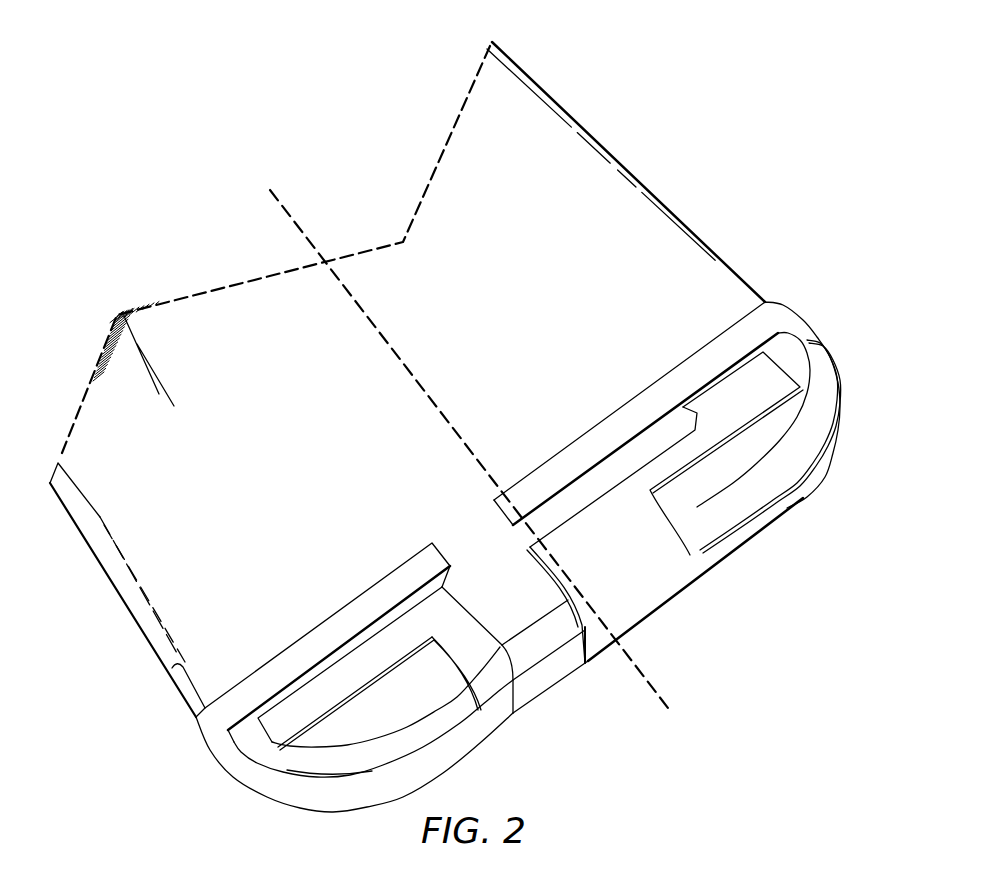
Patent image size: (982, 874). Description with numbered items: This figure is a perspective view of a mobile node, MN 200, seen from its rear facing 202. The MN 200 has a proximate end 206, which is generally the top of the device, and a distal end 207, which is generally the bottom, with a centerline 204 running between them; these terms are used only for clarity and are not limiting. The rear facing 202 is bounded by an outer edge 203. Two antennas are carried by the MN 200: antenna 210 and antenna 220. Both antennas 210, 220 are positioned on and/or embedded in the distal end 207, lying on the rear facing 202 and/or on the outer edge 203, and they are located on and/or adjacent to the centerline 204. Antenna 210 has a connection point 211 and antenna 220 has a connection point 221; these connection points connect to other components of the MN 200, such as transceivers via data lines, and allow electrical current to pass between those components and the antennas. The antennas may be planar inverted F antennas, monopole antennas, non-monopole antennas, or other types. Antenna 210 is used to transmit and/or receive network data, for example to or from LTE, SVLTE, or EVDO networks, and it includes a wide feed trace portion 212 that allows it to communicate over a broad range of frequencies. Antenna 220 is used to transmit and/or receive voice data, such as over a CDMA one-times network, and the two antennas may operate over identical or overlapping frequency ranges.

The MN 200 is at (163, 172).
The rear facing 202 is at (479, 289).
The outer edge 203 is at (327, 772).
The centerline 204 is at (636, 658).
The proximate end 206 is at (495, 40).
The distal end 207 is at (550, 673).
The antenna 210 is at (815, 305).
The connection point 211 is at (670, 463).
The wide feed trace portion 212 is at (648, 590).
The antenna 220 is at (216, 783).
The connection point 221 is at (355, 667).